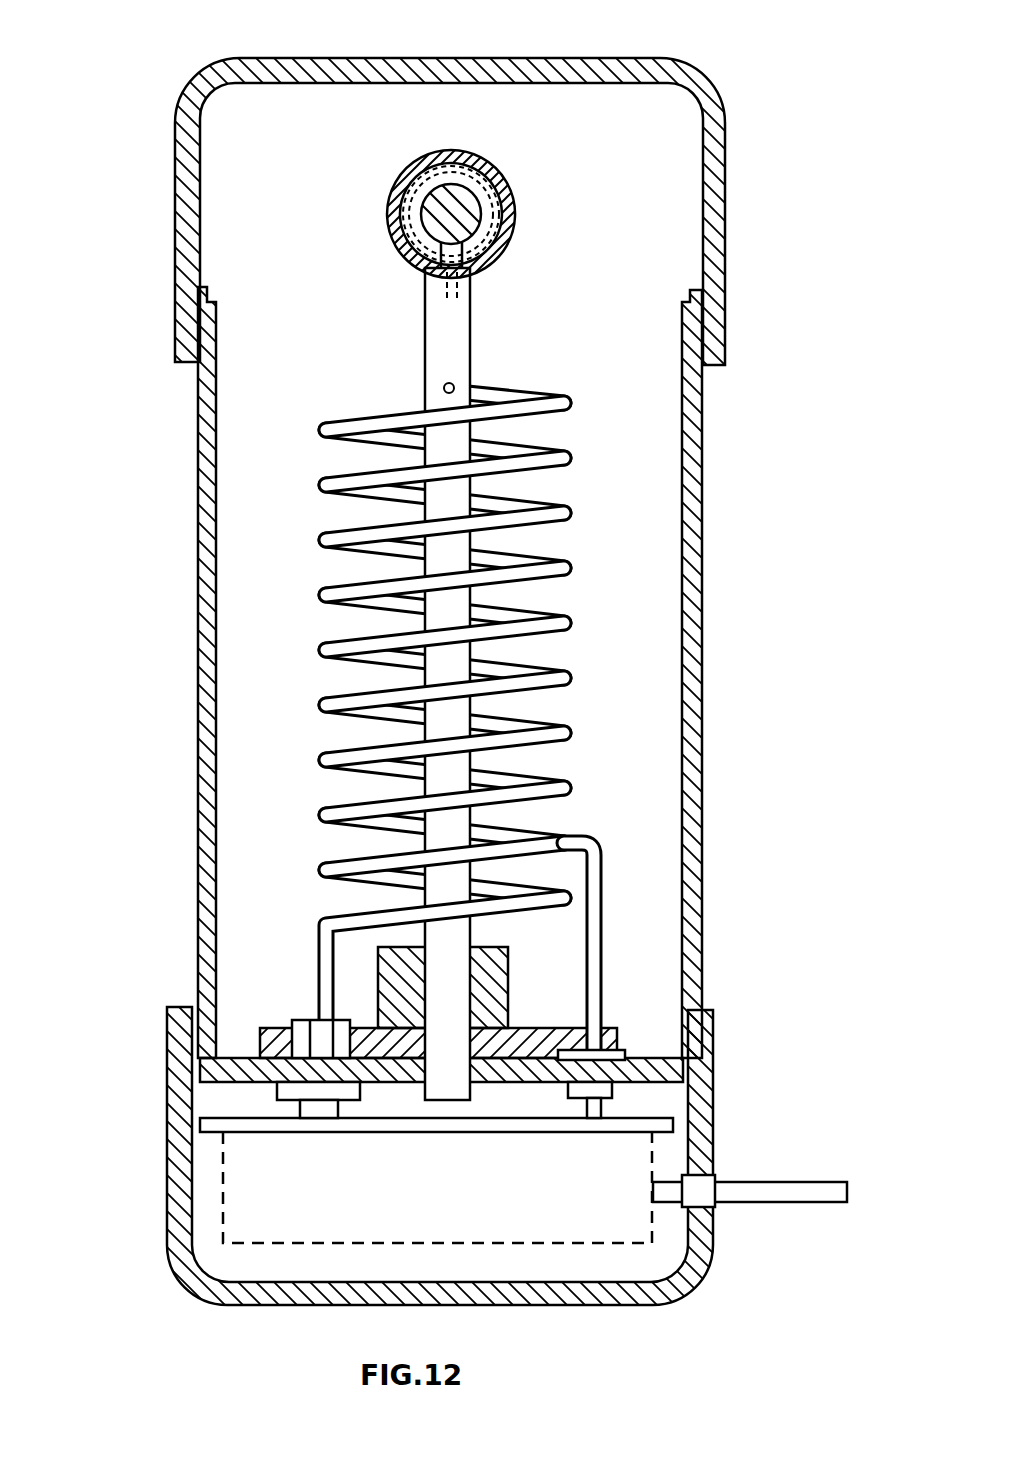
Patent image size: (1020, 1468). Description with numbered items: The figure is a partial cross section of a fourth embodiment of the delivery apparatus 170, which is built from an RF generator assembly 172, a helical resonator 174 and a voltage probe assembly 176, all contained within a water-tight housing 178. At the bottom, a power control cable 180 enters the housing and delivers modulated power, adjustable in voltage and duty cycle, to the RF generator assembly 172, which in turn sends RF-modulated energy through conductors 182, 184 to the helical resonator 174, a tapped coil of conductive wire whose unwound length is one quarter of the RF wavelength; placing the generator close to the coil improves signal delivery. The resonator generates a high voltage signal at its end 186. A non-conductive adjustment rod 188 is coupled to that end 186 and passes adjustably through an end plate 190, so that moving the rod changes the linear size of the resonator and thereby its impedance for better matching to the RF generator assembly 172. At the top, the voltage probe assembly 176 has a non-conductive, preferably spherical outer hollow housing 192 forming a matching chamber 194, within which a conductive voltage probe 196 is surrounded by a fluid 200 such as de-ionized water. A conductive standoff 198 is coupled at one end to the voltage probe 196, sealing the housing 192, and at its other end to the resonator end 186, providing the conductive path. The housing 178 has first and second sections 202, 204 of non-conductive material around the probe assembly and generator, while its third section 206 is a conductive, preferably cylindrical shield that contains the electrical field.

The delivery apparatus 170 is at (796, 90).
The RF generator assembly 172 is at (634, 1158).
The helical resonator 174 is at (230, 630).
The voltage probe assembly 176 is at (515, 240).
The water-tight housing 178 is at (704, 606).
The power control cable 180 is at (822, 1200).
The conductor 182 is at (322, 1018).
The conductor 184 is at (599, 1022).
The end of helical resonator 186 is at (442, 388).
The adjustment rod 188 is at (525, 492).
The end plate 190 is at (196, 1088).
The outer hollow housing 192 is at (513, 197).
The matching chamber 194 is at (478, 262).
The voltage probe 196 is at (393, 190).
The conductive standoff 198 is at (472, 368).
The fluid 200 is at (497, 158).
The first section of housing 202 is at (205, 238).
The second section of housing 204 is at (196, 1272).
The third section of housing 206 is at (218, 368).